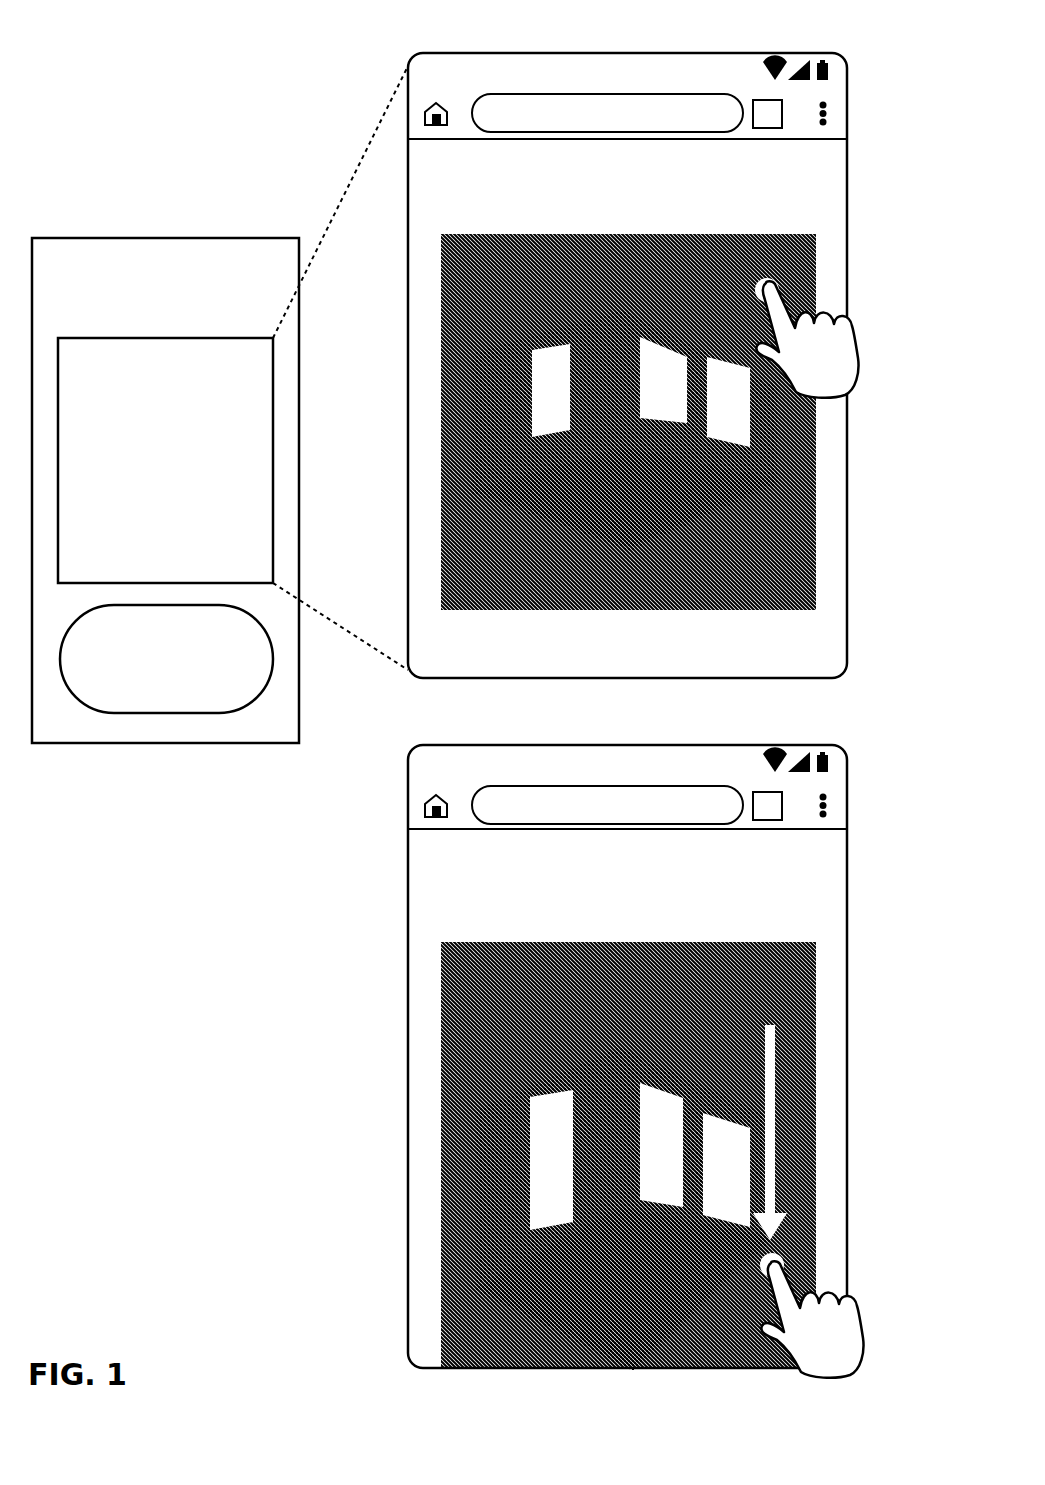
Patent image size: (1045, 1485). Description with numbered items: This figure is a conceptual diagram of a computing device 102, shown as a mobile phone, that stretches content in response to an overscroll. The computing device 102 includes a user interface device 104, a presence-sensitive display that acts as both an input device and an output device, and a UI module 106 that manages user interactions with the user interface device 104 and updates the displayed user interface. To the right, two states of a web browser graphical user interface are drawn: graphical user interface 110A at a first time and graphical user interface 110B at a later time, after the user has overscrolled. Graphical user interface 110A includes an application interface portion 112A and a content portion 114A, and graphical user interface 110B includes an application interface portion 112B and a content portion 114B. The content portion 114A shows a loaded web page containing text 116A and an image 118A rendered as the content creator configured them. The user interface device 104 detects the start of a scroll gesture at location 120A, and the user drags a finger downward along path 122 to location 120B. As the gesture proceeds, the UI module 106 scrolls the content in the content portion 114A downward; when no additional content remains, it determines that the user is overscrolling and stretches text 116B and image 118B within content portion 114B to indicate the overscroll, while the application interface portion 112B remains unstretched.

The computing device 102 is at (165, 490).
The user interface device 104 is at (165, 460).
The UI module 106 is at (166, 659).
The graphical user interface 110A is at (593, 52).
The graphical user interface 110B is at (593, 744).
The application interface portion 112A is at (815, 103).
The application interface portion 112B is at (815, 793).
The content portion 114A is at (815, 186).
The content portion 114B is at (815, 876).
The text 116A is at (560, 183).
The text 116B is at (560, 890).
The image 118A is at (805, 545).
The image 118B is at (785, 972).
The location 120A is at (772, 290).
The location 120B is at (777, 1262).
The path 122 is at (770, 1117).